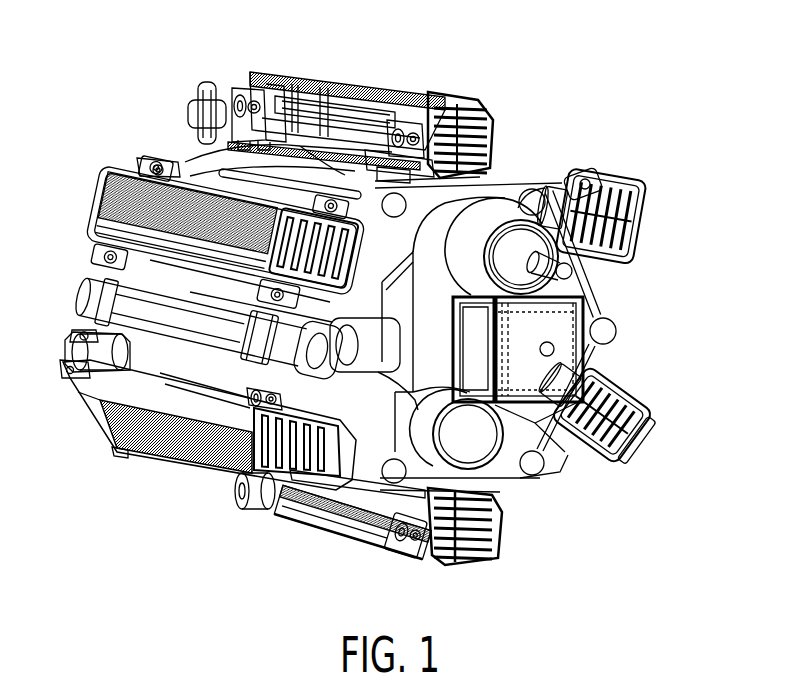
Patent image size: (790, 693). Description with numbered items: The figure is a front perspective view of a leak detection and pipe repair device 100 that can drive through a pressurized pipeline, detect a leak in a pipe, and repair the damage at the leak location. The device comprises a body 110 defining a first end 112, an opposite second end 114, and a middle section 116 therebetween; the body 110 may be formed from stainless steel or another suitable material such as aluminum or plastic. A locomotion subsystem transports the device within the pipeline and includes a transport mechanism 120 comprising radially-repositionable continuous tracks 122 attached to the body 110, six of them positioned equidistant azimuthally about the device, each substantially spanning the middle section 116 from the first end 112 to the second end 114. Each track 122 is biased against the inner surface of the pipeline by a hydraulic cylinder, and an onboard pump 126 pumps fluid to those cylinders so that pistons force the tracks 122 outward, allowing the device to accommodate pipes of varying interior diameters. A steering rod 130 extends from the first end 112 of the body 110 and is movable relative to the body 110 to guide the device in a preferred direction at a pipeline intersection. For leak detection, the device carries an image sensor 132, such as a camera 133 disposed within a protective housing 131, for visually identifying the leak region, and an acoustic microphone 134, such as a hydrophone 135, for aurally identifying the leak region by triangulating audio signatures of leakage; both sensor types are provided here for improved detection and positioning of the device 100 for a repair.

The leak detection and pipe repair device 100 is at (689, 133).
The body 110 is at (560, 136).
The first end 112 is at (537, 440).
The second end 114 is at (190, 158).
The middle section 116 is at (340, 173).
The transport mechanism 120 is at (472, 83).
The continuous tracks 122 is at (366, 76).
The onboard pump 126 is at (84, 292).
The steering rod 130 is at (566, 273).
The protective housing 131 is at (538, 322).
The image sensor 132 is at (610, 333).
The camera 133 is at (553, 352).
The acoustic microphone 134 is at (460, 447).
The hydrophone 135 is at (483, 448).